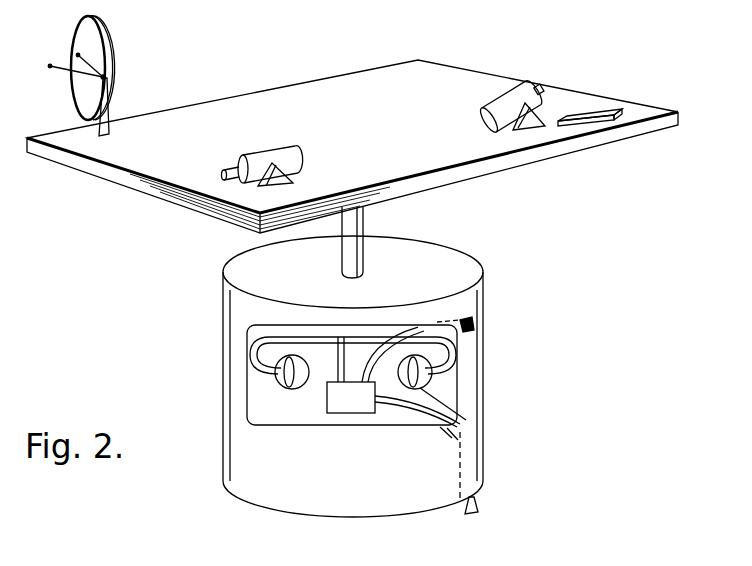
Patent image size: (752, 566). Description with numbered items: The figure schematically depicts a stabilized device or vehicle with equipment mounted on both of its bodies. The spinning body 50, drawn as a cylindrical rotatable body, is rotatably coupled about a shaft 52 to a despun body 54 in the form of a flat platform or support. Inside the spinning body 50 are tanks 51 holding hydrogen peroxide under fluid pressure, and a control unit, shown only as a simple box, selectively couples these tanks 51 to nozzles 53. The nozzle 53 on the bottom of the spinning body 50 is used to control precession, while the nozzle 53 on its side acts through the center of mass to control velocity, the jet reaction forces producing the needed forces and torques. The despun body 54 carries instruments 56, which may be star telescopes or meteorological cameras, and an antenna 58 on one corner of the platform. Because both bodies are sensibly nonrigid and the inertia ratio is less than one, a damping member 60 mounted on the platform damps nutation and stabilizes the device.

The spinning body 50 is at (484, 470).
The tanks 51 is at (467, 417).
The shaft 52 is at (363, 234).
The nozzles 53 is at (472, 320).
The despun body 54 is at (396, 123).
The instruments 56 is at (287, 150).
The antenna 58 is at (106, 68).
The damping member 60 is at (612, 112).